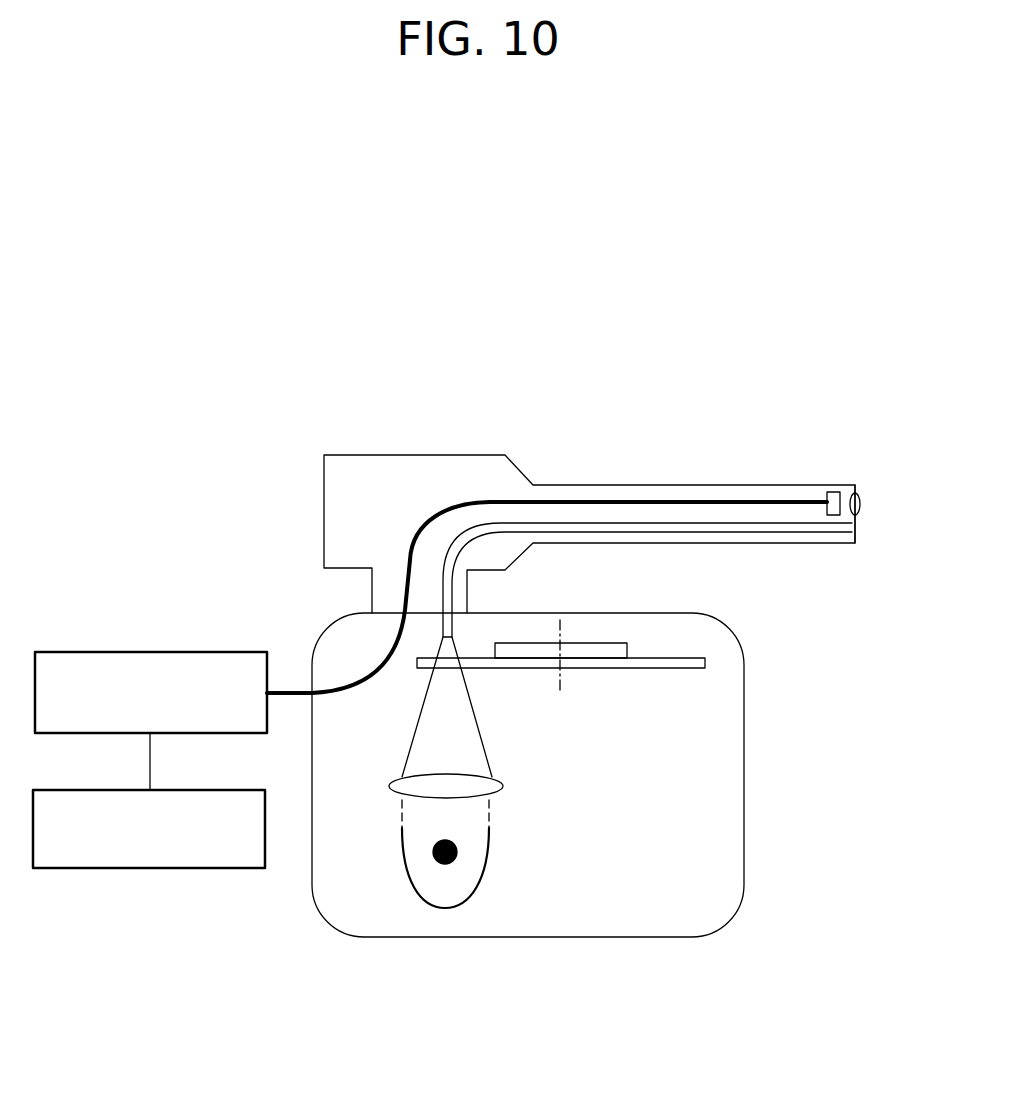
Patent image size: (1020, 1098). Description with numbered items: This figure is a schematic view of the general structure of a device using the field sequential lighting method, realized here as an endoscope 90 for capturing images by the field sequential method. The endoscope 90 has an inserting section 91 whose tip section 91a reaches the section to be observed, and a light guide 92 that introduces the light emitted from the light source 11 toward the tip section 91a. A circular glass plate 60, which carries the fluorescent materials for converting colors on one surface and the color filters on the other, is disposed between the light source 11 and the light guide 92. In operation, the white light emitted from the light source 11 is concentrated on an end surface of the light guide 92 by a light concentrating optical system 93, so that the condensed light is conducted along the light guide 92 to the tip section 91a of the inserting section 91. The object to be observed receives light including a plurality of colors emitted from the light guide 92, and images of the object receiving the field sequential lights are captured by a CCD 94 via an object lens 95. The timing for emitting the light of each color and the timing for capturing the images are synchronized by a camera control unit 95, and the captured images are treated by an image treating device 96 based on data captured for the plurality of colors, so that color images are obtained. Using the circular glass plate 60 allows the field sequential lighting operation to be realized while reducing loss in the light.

The endoscope 90 is at (672, 392).
The inserting section 91 is at (640, 485).
The tip section 91a is at (836, 487).
The light guide 92 is at (800, 537).
The light concentrating optical system 93 is at (502, 787).
The CCD 94 is at (827, 502).
The camera control unit 95 is at (861, 508).
The image treating device 96 is at (88, 870).
The circular glass plate 60 is at (705, 665).
The light source 11 is at (500, 866).